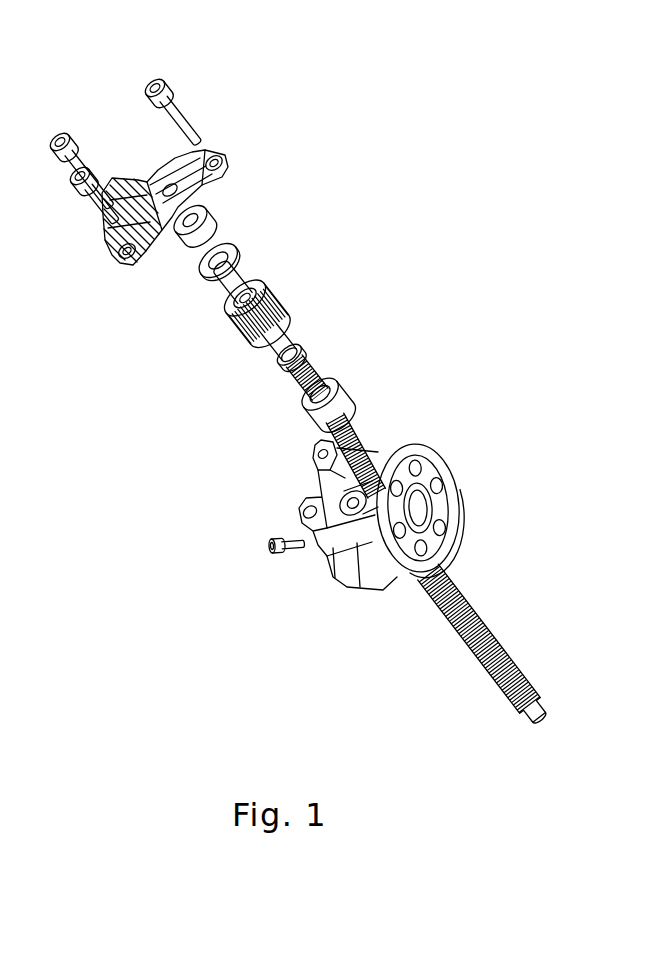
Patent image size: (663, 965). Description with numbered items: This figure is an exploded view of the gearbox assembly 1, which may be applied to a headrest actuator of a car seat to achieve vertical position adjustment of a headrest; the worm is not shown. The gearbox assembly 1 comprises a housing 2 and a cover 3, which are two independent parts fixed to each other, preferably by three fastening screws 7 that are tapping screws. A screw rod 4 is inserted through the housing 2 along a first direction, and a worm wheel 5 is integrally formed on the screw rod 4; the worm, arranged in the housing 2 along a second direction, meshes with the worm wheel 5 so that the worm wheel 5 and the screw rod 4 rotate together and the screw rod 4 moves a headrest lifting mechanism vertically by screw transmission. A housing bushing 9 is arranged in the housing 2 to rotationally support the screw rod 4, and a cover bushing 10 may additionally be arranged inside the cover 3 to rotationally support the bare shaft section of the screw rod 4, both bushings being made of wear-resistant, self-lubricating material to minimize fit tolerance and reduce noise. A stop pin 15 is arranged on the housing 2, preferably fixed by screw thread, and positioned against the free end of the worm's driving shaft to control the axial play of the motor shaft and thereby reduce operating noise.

The gearbox assembly 1 is at (218, 714).
The housing 2 is at (390, 537).
The cover 3 is at (130, 268).
The screw rod 4 is at (293, 392).
The worm wheel 5 is at (242, 340).
The fastening screws 7 is at (168, 85).
The housing bushing 9 is at (350, 403).
The cover bushing 10 is at (225, 220).
The stop pin 15 is at (266, 552).